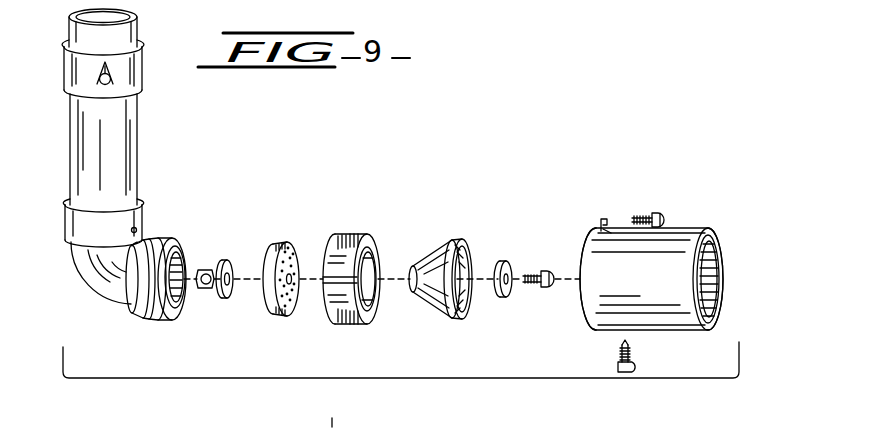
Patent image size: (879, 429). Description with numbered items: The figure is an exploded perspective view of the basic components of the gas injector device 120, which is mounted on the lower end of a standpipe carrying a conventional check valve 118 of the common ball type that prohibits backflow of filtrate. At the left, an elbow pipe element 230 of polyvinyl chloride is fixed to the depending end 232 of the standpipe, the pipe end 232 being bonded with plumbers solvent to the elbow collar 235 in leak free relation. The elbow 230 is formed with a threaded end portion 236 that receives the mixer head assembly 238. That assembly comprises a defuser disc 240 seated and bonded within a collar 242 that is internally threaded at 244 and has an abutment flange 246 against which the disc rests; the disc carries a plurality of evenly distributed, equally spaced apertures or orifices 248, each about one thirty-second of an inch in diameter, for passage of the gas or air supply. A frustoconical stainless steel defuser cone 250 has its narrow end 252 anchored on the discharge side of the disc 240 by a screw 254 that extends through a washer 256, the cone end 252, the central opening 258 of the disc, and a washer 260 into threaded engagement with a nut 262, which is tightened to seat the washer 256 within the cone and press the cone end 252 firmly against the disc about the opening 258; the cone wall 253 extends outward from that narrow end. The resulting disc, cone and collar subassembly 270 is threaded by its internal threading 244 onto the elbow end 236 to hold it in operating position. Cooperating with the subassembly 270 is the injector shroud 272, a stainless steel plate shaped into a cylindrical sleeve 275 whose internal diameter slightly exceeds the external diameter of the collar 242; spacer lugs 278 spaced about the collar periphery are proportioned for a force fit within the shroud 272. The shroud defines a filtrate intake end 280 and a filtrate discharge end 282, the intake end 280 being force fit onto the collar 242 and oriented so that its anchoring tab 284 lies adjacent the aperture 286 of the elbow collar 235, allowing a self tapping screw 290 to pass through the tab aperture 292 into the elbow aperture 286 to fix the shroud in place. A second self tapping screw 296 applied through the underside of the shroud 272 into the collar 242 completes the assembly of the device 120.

The check valve 118 is at (126, 68).
The gas injector device 120 is at (262, 186).
The elbow pipe element 230 is at (95, 284).
The depending end of the standpipe 232 is at (78, 183).
The elbow collar 235 is at (98, 227).
The threaded end portion 236 is at (155, 316).
The mixer head assembly 238 is at (676, 188).
The defuser disc 240 is at (283, 243).
The collar 242 is at (371, 245).
The internal threading 244 is at (376, 268).
The abutment flange 246 is at (366, 313).
The apertures or orifices 248 is at (291, 310).
The defuser cone 250 is at (468, 311).
The narrow end of the defuser cone 252 is at (435, 249).
The cone wall 253 is at (452, 318).
The screw 254 is at (530, 273).
The washer 256 is at (510, 295).
The central opening 258 is at (294, 266).
The washer 260 is at (226, 259).
The nut 262 is at (204, 290).
The defuser disc, cone, and collar subassembly 270 is at (311, 370).
The injector shroud 272 is at (723, 224).
The cylindrical sleeve 275 is at (710, 268).
The spacer lugs 278 is at (344, 238).
The filtrate intake end 280 is at (597, 326).
The filtrate discharge end 282 is at (720, 315).
The anchoring tab 284 is at (600, 228).
The aperture of the elbow collar 286 is at (136, 227).
The self tapping screw 290 is at (661, 211).
The tab aperture 292 is at (606, 231).
The self tapping screw 296 is at (625, 376).